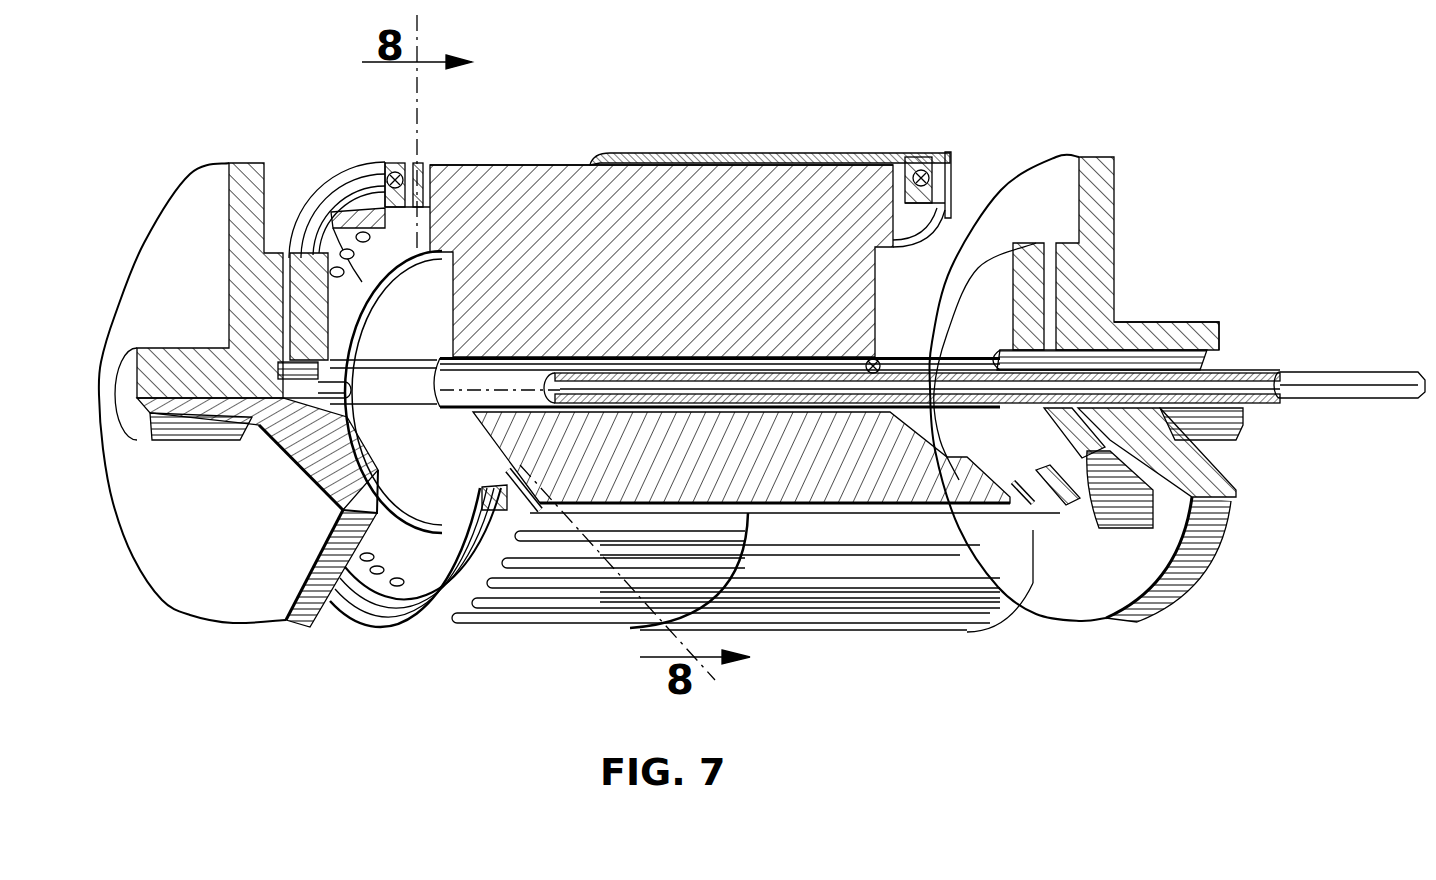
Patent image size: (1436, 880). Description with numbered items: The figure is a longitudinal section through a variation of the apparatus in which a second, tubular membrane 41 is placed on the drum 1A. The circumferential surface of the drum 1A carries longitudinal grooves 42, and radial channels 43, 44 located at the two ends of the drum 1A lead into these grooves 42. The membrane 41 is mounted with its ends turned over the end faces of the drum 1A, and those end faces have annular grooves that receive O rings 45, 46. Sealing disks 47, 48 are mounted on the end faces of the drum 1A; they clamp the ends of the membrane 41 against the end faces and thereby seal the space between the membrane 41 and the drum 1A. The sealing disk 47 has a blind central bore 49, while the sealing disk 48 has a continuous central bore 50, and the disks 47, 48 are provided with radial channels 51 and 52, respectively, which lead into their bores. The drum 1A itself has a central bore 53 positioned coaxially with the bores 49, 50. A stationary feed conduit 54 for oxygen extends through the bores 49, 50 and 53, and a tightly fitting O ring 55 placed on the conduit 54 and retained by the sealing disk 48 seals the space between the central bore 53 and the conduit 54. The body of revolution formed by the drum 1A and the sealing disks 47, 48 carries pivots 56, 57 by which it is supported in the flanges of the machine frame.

The drum 1A is at (513, 165).
The second tubular membrane 41 is at (828, 153).
The longitudinal grooves 42 is at (567, 165).
The radial channel 43 is at (416, 165).
The radial channel 44 is at (915, 158).
The O ring 45 is at (346, 195).
The O ring 46 is at (950, 188).
The sealing disk 47 is at (160, 530).
The sealing disk 48 is at (1185, 565).
The blind central bore 49 is at (330, 388).
The continuous central bore 50 is at (1200, 360).
The radial channels 51 is at (290, 303).
The radial channels 52 is at (1063, 282).
The central bore 53 is at (437, 382).
The stationary feed conduit 54 is at (1302, 375).
The O ring 55 is at (880, 364).
The pivot 56 is at (125, 385).
The pivot 57 is at (1175, 325).